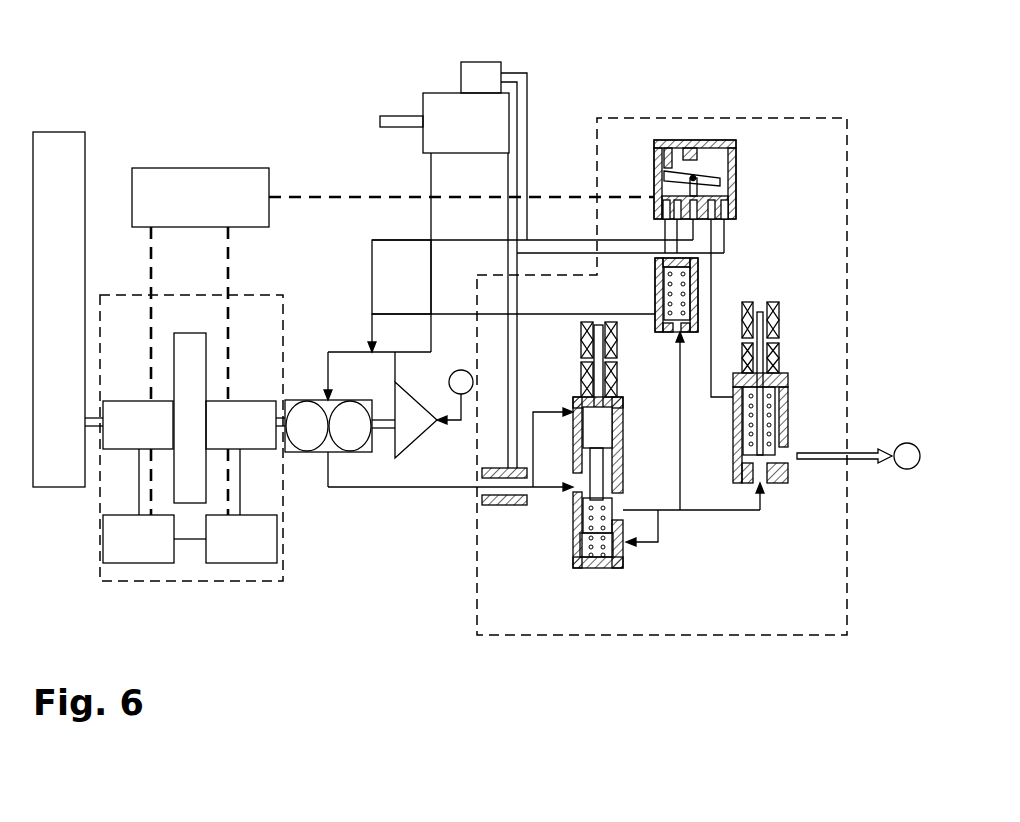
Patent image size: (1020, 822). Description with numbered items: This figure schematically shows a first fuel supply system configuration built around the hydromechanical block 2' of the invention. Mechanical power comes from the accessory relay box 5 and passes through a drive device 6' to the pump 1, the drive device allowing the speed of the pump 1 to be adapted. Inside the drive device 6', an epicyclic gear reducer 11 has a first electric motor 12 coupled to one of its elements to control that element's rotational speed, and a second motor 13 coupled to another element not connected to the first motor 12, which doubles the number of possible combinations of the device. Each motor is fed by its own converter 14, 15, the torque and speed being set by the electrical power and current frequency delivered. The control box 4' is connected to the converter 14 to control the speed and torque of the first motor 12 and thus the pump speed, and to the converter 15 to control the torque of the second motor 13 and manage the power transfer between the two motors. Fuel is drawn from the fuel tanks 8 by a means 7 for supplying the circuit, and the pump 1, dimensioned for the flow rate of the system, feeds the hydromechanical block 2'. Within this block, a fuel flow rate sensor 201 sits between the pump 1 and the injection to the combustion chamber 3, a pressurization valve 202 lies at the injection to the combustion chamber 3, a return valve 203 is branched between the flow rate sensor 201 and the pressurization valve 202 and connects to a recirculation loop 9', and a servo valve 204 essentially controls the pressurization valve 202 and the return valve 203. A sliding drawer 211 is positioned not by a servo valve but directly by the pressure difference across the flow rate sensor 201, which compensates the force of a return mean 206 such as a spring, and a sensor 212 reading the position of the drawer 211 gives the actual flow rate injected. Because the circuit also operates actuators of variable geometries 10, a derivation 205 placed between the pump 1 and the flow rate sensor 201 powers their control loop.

The accessory relay box 5 is at (66, 158).
The control box 4' is at (393, 306).
The drive device 6' is at (191, 491).
The epicyclic gear reducer 11 is at (187, 345).
The first electric motor 12 is at (118, 410).
The second motor 13 is at (250, 408).
The converter 14 is at (128, 538).
The converter 15 is at (243, 538).
The pump 1 is at (295, 452).
The means for supplying the circuit 7 is at (420, 440).
The fuel tanks 8 is at (455, 397).
The recirculation loop 9' is at (489, 276).
The actuators of variable geometries 10 is at (442, 105).
The derivation 205 is at (513, 507).
The hydromechanical block 2' is at (644, 402).
The servo valve 204 is at (717, 142).
The return valve 203 is at (700, 277).
The position sensor 212 is at (604, 358).
The sliding drawer 211 is at (598, 472).
The fuel flow rate sensor 201 is at (575, 548).
The return mean 206 is at (630, 542).
The pressurization valve 202 is at (788, 475).
The combustion chamber 3 is at (858, 456).